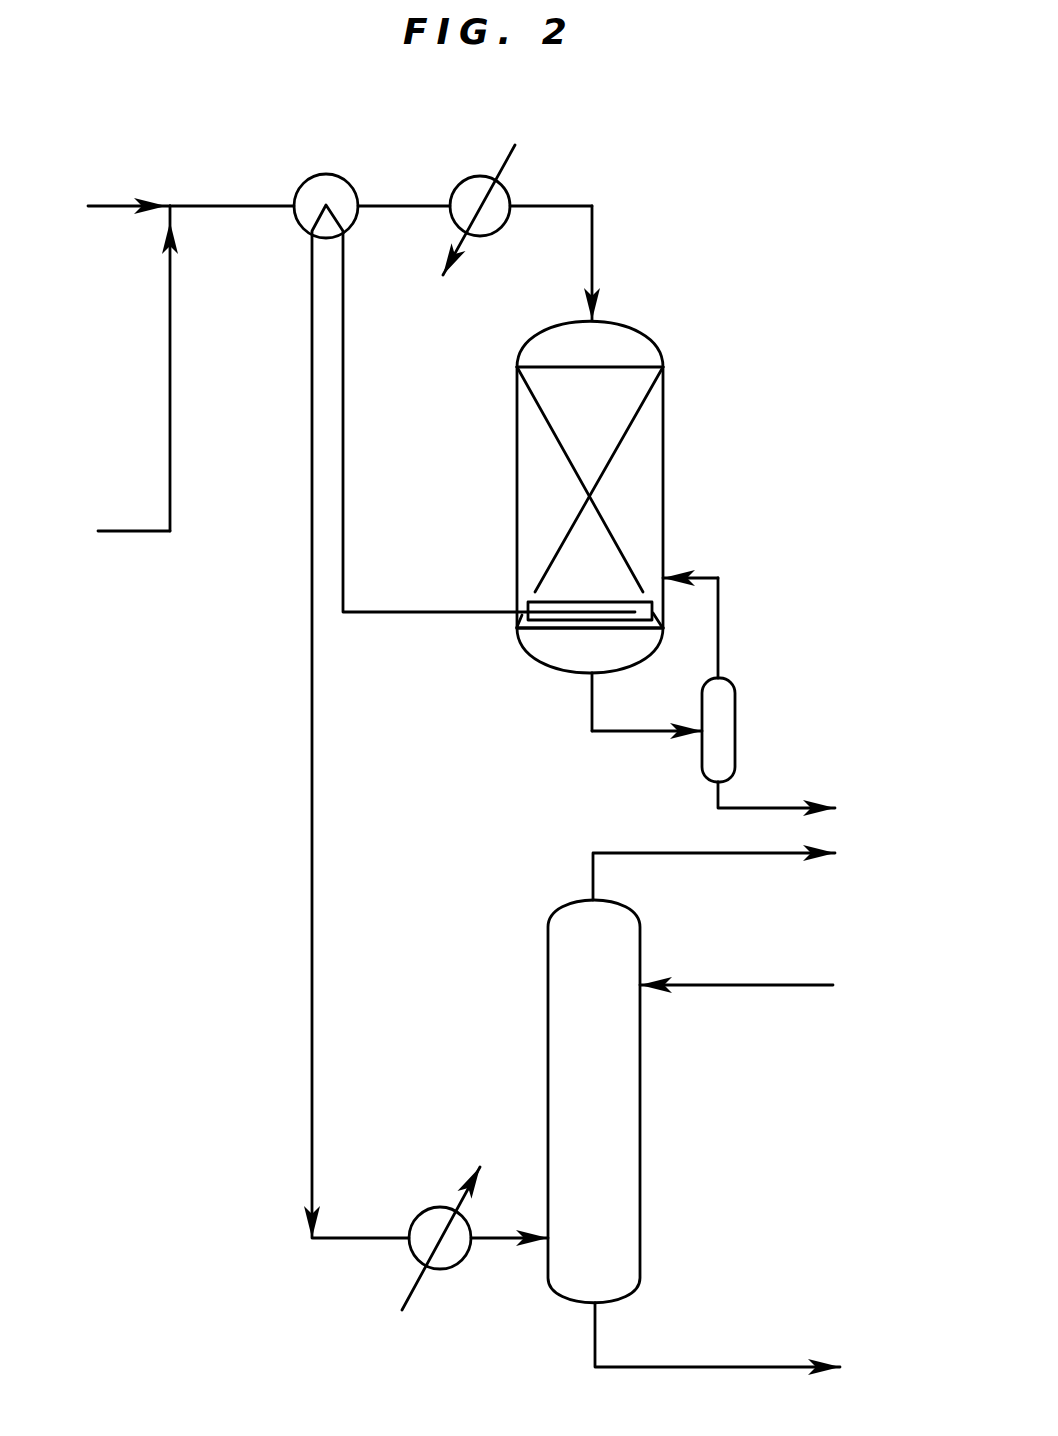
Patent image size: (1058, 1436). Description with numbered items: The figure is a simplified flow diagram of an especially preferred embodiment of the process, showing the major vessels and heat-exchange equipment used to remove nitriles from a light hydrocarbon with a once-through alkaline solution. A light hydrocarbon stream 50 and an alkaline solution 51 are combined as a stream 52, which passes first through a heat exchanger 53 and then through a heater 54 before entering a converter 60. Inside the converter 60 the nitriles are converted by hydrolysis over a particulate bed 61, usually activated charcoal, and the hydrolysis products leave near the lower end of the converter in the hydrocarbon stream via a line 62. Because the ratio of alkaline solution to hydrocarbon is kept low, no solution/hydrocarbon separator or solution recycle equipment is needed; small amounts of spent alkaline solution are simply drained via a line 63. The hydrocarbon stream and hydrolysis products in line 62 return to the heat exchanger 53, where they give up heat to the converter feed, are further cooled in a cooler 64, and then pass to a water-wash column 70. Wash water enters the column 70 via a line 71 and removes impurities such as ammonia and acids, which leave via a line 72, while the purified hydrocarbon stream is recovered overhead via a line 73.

The light hydrocarbon stream 50 is at (148, 213).
The alkaline solution 51 is at (134, 531).
The combined stream 52 is at (250, 205).
The heat exchanger 53 is at (326, 174).
The heater 54 is at (462, 180).
The converter 60 is at (665, 468).
The particulate bed 61 is at (567, 500).
The line 62 is at (414, 612).
The line 63 is at (762, 808).
The cooler 64 is at (452, 1265).
The water-wash column 70 is at (548, 968).
The line 71 is at (733, 985).
The line 72 is at (712, 1367).
The line 73 is at (720, 853).